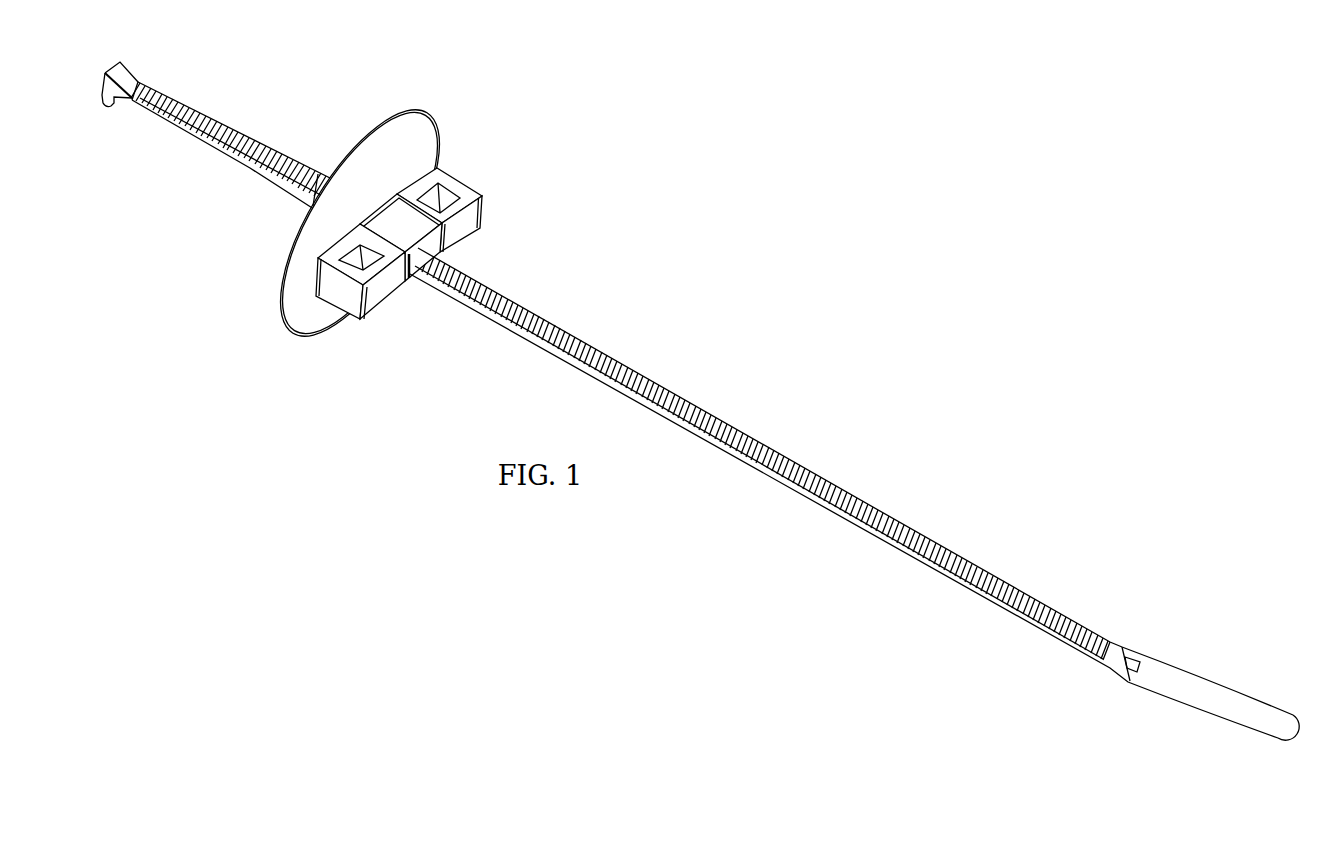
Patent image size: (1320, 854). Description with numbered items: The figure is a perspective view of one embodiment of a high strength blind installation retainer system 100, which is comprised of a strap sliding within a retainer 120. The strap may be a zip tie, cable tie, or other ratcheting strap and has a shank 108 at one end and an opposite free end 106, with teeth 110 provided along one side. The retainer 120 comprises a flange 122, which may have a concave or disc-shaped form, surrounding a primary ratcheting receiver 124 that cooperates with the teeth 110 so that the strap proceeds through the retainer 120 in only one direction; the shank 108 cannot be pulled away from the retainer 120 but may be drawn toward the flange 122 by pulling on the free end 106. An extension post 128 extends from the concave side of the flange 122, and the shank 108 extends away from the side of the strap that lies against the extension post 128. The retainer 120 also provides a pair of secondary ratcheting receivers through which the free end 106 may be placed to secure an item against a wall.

The high strength blind installation retainer system 100 is at (787, 284).
The free end 106 is at (1222, 698).
The shank 108 is at (107, 107).
The teeth 110 is at (830, 478).
The retainer 120 is at (425, 113).
The flange 122 is at (390, 118).
The primary ratcheting receiver 124 is at (414, 288).
The extension post 128 is at (327, 175).